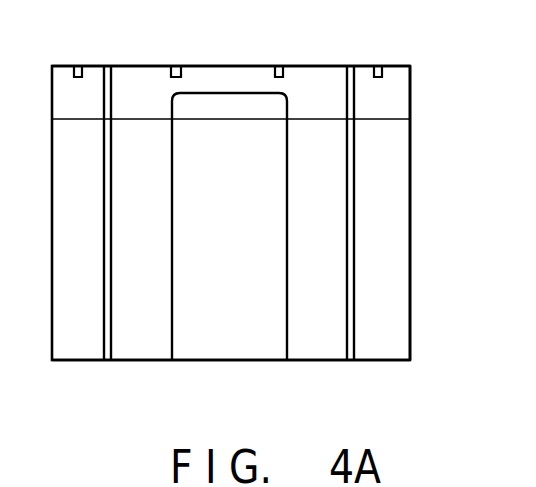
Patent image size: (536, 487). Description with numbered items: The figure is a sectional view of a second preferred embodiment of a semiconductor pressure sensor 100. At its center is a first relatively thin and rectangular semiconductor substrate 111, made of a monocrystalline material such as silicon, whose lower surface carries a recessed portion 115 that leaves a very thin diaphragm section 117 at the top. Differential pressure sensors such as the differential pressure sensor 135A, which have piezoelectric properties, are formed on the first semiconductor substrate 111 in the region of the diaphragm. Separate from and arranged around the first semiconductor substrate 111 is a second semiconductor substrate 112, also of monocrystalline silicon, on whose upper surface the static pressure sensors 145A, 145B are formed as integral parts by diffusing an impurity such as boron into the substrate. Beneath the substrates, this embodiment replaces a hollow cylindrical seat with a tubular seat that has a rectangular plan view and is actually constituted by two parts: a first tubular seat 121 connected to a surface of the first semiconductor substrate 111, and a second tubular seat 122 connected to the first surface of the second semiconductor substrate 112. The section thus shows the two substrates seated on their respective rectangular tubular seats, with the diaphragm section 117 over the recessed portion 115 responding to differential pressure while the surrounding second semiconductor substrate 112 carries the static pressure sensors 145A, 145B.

The semiconductor pressure sensor 100 is at (53, 265).
The first semiconductor substrate 111 is at (373, 48).
The second semiconductor substrate 112 is at (469, 117).
The recessed portion 115 is at (253, 117).
The diaphragm section 117 is at (242, 66).
The first tubular seat 121 is at (319, 362).
The second tubular seat 122 is at (474, 276).
The differential pressure sensor 135A is at (176, 66).
The static pressure sensor 145A is at (78, 66).
The static pressure sensor 145B is at (379, 66).